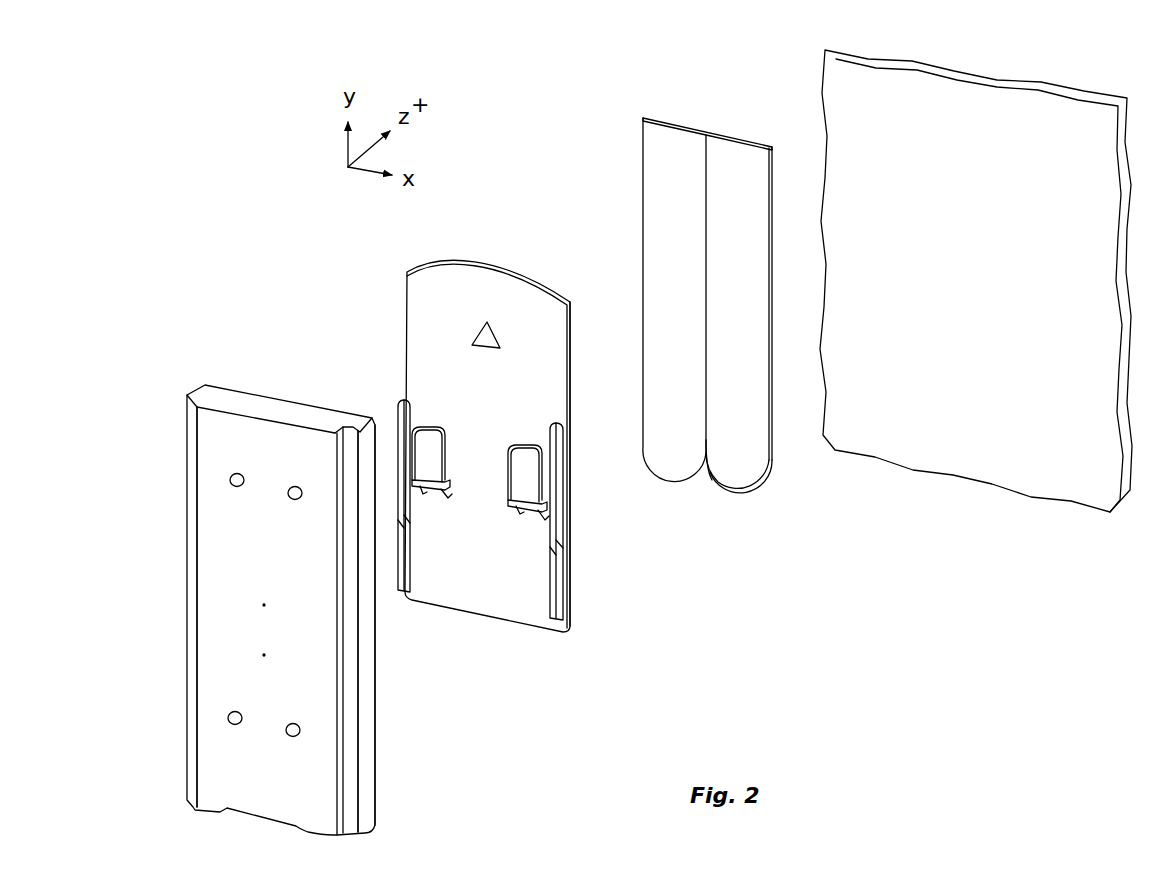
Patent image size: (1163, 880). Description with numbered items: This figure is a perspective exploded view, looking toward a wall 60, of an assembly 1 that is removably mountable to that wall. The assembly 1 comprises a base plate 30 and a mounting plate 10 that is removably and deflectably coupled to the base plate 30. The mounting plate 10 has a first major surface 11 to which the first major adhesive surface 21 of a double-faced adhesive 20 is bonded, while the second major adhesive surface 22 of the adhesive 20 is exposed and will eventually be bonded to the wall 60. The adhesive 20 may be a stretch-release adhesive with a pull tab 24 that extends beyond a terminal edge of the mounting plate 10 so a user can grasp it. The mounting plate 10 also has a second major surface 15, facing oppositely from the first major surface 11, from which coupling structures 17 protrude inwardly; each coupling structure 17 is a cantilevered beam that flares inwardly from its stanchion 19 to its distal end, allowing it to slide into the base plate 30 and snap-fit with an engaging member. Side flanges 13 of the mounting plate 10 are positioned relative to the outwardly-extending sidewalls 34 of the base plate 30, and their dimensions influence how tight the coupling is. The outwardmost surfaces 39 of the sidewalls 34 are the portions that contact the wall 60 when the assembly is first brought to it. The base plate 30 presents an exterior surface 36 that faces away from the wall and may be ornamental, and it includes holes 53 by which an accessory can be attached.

The assembly 1 is at (122, 310).
The mounting plate 10 is at (385, 260).
The first major surface 11 is at (580, 320).
The side flanges 13 is at (560, 530).
The second major surface 15 is at (425, 328).
The coupling structure 17 is at (428, 438).
The stanchion 19 is at (455, 490).
The double-faced adhesive 20 is at (627, 116).
The first major adhesive surface 21 is at (650, 157).
The second major adhesive surface 22 is at (782, 232).
The pull tab 24 is at (740, 478).
The base plate 30 is at (170, 380).
The sidewalls 34 is at (368, 757).
The exterior surface 36 is at (206, 622).
The outwardmost surfaces 39 is at (375, 683).
The holes 53 is at (291, 497).
The wall 60 is at (982, 286).